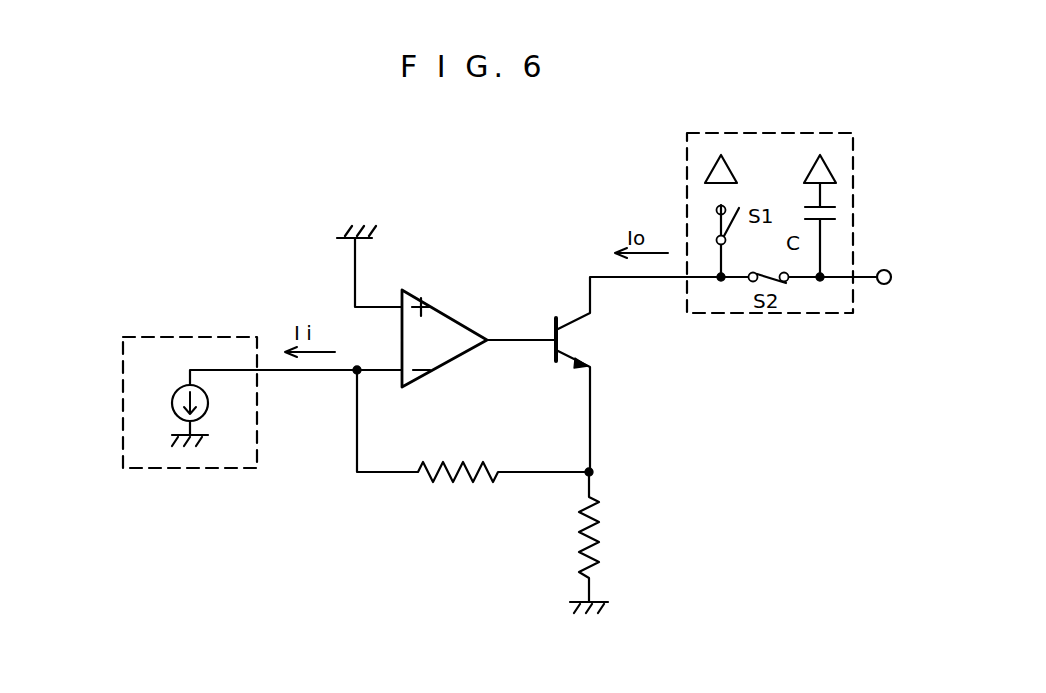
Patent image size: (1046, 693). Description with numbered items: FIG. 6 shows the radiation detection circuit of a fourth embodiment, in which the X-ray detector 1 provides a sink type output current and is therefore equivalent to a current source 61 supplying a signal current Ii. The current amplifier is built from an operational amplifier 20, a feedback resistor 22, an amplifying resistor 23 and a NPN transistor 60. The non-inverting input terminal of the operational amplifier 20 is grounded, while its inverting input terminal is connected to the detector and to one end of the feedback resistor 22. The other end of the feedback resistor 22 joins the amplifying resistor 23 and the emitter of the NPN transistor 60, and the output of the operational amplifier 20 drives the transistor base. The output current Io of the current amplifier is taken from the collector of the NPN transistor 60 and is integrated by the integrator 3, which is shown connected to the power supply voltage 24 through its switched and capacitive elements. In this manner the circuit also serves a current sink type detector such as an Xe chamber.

The X-ray detector 1 is at (185, 336).
The current source 61 is at (172, 403).
The operational amplifier 20 is at (435, 306).
The NPN transistor 60 is at (590, 340).
The feedback resistor 22 is at (457, 482).
The amplifying resistor 23 is at (597, 540).
The power supply voltage 24 is at (731, 164).
The integrator 3 is at (770, 311).